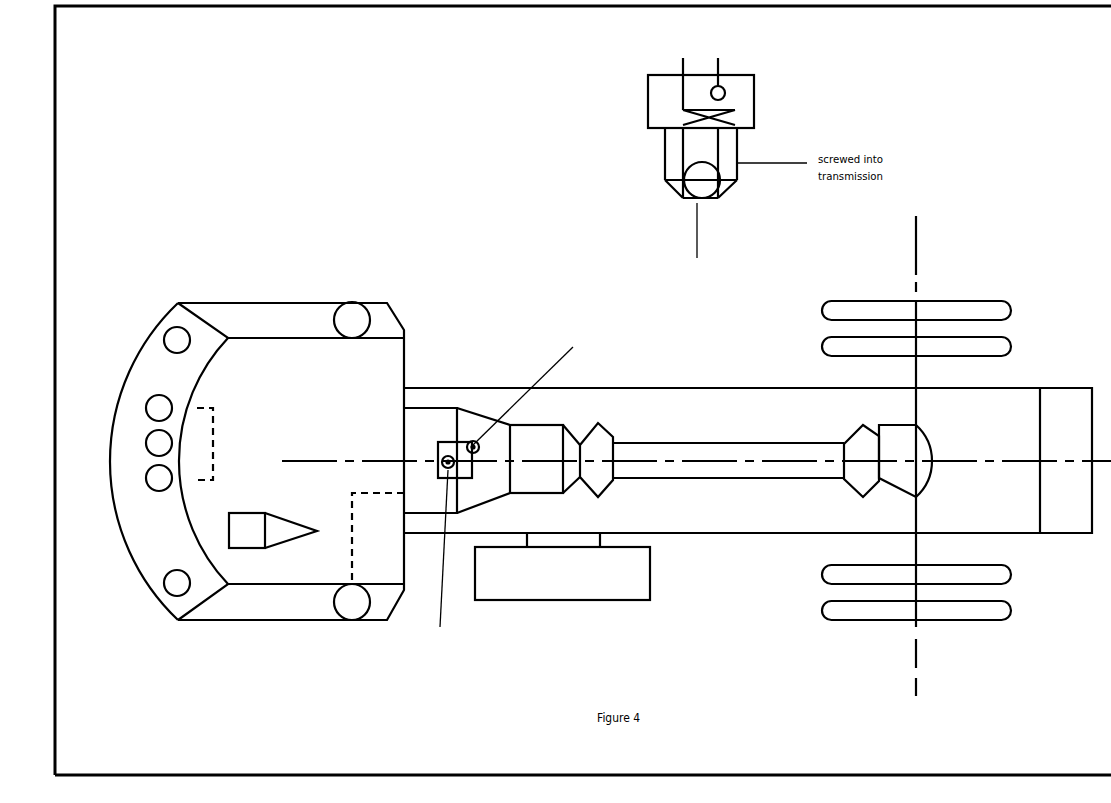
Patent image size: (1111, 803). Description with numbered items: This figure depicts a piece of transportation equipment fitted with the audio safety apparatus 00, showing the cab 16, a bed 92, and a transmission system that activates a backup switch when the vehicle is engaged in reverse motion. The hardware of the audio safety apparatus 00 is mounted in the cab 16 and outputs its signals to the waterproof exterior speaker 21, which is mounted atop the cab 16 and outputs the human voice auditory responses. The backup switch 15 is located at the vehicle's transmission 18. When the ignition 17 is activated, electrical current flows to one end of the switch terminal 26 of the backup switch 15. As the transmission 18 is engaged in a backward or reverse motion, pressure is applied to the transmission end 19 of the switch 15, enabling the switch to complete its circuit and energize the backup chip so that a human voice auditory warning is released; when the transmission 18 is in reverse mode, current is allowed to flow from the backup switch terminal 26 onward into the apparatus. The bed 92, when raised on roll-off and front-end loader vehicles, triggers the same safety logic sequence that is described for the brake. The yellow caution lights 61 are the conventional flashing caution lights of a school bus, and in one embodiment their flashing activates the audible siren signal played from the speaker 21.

The backup switch 15 is at (473, 442).
The cab 16 is at (247, 303).
The ignition 17 is at (672, 60).
The transmission 18 is at (422, 425).
The transmission end 19 is at (707, 200).
The waterproof exterior speaker 21 is at (247, 550).
The switch terminal 26 is at (718, 62).
The yellow caution lights 61 is at (140, 408).
The bed 92 is at (775, 388).
The audio safety apparatus 00 is at (199, 468).